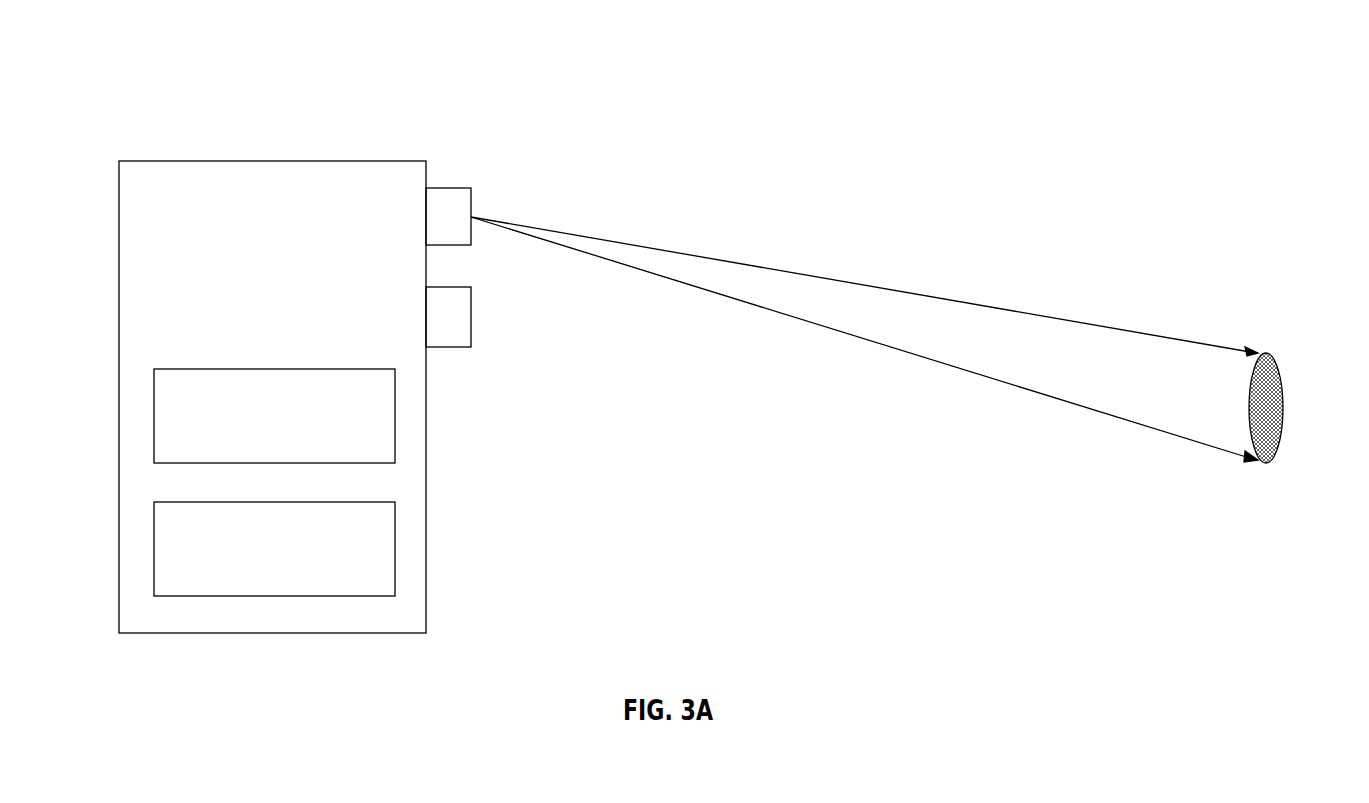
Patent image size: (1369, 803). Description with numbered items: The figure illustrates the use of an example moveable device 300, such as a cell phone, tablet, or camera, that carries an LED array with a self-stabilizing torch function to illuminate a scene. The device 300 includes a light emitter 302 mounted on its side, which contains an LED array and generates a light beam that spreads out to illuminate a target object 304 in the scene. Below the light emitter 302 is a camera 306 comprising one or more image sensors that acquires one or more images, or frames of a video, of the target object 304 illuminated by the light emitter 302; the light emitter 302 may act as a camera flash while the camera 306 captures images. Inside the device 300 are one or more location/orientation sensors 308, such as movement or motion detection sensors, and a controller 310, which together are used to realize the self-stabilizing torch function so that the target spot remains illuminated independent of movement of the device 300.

The moveable device 300 is at (193, 77).
The light emitter 302 is at (452, 188).
The target object 304 is at (1280, 368).
The camera 306 is at (452, 287).
The location/orientation sensors 308 is at (291, 451).
The controller 310 is at (291, 570).